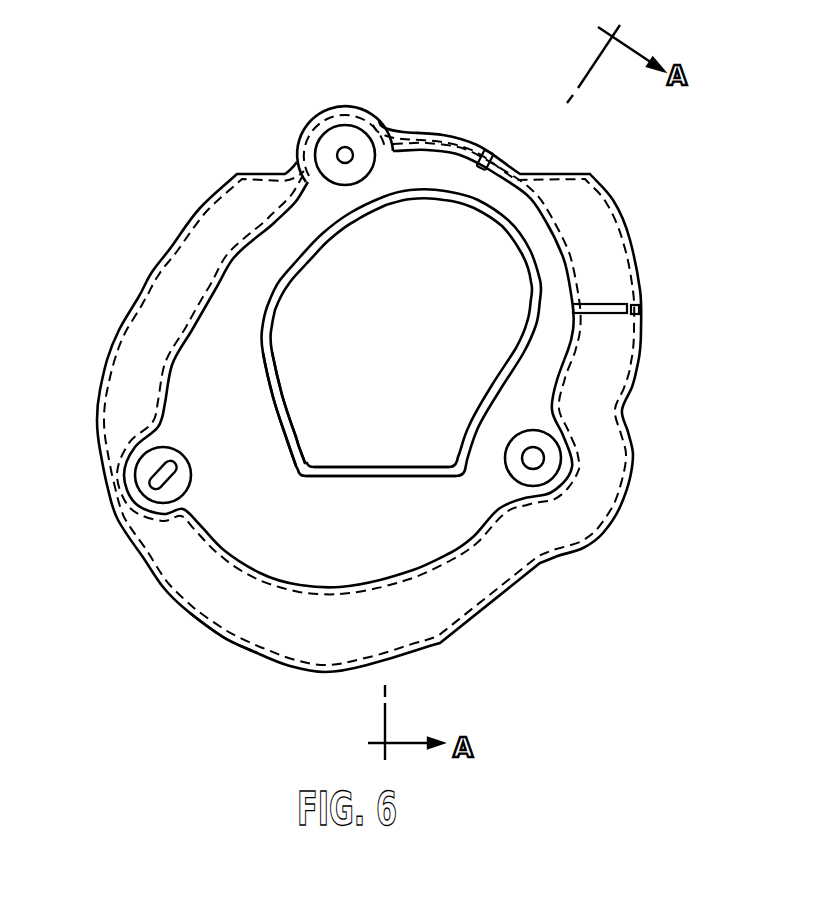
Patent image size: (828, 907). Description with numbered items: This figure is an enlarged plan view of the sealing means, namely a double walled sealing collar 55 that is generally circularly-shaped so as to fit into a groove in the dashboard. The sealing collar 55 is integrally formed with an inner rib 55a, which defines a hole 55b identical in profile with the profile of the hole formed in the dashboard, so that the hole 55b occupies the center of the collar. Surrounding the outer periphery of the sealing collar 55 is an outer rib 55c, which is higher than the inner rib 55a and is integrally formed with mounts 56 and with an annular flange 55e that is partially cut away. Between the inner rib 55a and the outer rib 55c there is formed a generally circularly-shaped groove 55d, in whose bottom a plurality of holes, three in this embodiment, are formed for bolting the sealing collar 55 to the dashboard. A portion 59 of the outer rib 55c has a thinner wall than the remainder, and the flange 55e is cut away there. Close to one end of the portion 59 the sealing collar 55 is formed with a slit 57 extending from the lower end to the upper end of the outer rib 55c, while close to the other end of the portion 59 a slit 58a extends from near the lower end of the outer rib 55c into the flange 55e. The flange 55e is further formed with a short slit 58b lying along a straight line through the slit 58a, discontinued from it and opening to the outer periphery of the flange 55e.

The sealing collar 55 is at (100, 345).
The inner rib 55a is at (288, 446).
The hole 55b is at (475, 287).
The outer rib 55c is at (458, 554).
The circular groove 55d is at (362, 536).
The annular flange 55e is at (236, 619).
The mounts 56 is at (345, 147).
The slit 57 is at (485, 152).
The slit 58a is at (603, 305).
The short slit 58b is at (640, 311).
The portion of the outer rib 59 is at (556, 200).